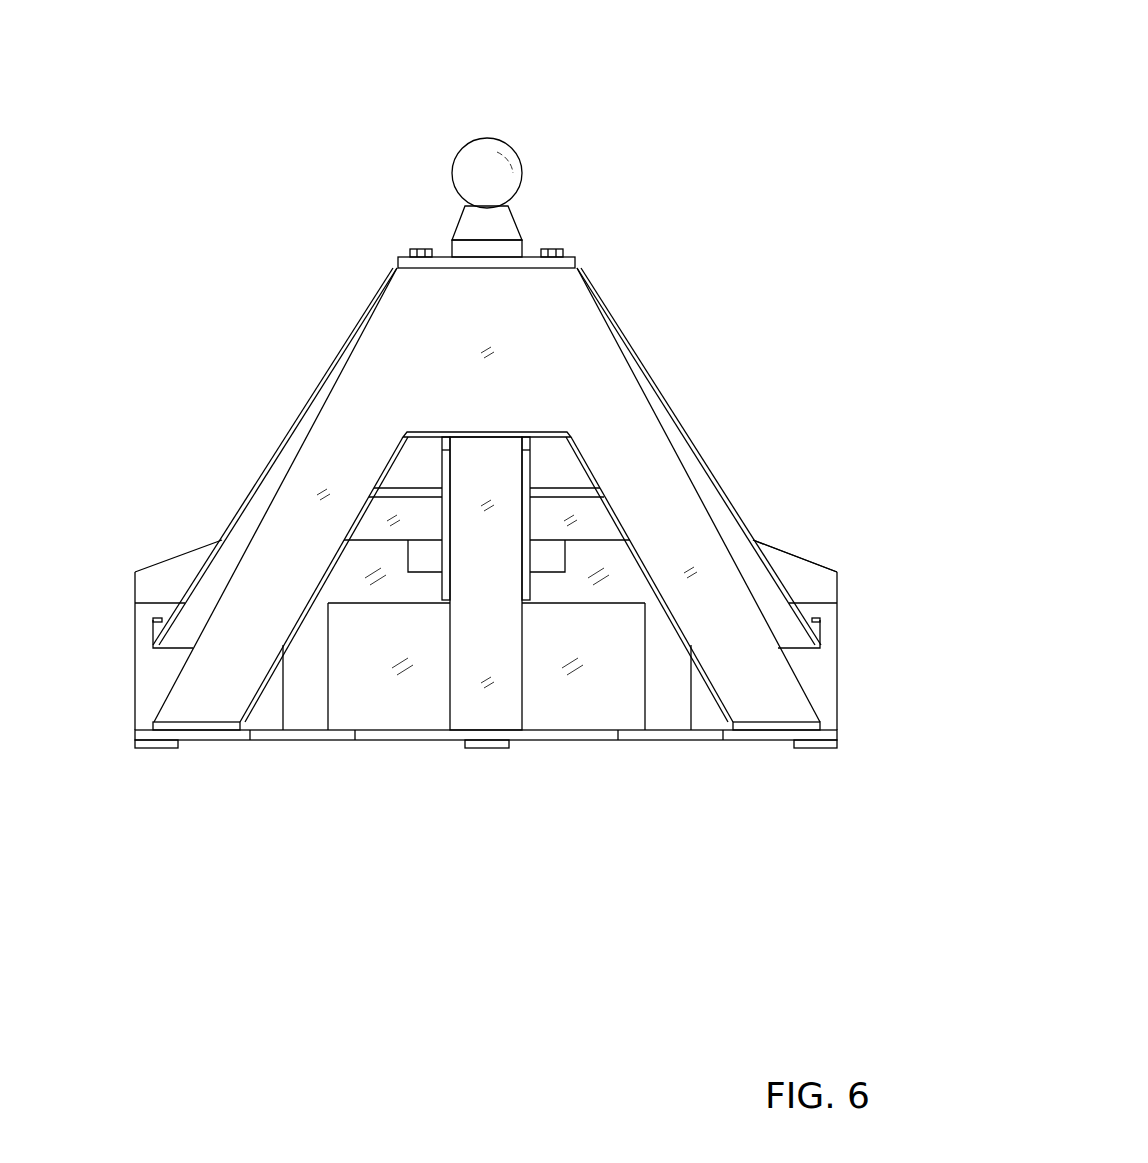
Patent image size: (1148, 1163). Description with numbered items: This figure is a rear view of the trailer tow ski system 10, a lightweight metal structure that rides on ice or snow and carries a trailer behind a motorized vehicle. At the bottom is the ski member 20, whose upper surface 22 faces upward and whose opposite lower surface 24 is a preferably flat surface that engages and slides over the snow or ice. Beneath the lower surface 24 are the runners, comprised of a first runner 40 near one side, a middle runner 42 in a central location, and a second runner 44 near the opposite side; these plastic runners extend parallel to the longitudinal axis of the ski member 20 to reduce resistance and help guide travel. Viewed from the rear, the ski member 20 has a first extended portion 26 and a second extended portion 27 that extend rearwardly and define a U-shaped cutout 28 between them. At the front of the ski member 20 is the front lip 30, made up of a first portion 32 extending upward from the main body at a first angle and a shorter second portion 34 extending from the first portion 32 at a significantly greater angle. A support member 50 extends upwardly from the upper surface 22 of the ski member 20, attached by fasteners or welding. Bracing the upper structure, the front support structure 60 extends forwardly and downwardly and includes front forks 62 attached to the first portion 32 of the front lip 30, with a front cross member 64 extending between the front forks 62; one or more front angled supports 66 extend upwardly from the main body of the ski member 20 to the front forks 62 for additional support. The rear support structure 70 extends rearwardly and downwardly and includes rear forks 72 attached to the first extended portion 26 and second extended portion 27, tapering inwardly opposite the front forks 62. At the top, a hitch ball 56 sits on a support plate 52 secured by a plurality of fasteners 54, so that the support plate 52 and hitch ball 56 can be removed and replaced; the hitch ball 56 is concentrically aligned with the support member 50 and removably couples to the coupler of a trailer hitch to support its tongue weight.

The trailer tow ski system 10 is at (676, 120).
The ski member 20 is at (634, 750).
The upper surface 22 is at (372, 730).
The lower surface 24 is at (578, 740).
The first extended portion 26 is at (753, 737).
The second extended portion 27 is at (210, 737).
The cutout 28 is at (395, 737).
The front lip 30 is at (846, 662).
The first portion 32 is at (135, 670).
The second portion 34 is at (807, 560).
The first runner 40 is at (815, 750).
The middle runner 42 is at (485, 750).
The second runner 44 is at (157, 750).
The support member 50 is at (447, 688).
The support plate 52 is at (442, 255).
The fasteners 54 is at (422, 248).
The hitch ball 56 is at (467, 145).
The front support structure 60 is at (710, 443).
The front forks 62 is at (278, 445).
The front cross member 64 is at (410, 487).
The front angled supports 66 is at (307, 657).
The rear support structure 70 is at (200, 613).
The rear forks 72 is at (292, 502).